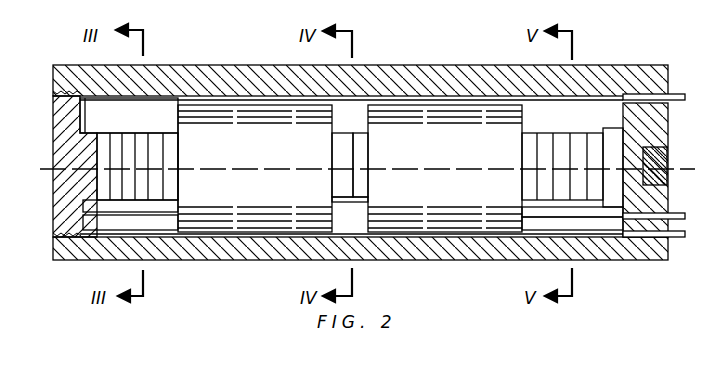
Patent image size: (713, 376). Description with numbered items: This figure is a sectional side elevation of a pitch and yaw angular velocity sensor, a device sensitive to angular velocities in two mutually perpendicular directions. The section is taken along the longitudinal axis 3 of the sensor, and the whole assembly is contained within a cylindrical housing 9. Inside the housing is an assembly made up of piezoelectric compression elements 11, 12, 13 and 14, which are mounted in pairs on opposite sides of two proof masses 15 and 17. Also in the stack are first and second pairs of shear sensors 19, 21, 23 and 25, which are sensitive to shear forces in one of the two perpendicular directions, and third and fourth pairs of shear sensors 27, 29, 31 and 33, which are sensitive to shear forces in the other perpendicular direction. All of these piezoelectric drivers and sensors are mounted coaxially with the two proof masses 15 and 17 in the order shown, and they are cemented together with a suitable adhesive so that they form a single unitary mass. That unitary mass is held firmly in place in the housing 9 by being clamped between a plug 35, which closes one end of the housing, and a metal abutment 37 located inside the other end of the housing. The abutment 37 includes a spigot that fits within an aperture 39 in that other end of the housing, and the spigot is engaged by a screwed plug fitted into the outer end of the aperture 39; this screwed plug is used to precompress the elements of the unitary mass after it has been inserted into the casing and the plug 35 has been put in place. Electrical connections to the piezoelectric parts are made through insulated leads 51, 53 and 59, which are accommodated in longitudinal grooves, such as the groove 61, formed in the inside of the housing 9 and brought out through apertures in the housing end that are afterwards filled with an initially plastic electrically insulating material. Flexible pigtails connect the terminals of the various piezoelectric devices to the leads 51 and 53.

The longitudinal axis 3 is at (262, 169).
The cylindrical housing 9 is at (388, 80).
The piezoelectric compression element 11 is at (173, 162).
The piezoelectric compression element 12 is at (340, 162).
The piezoelectric compression element 13 is at (360, 159).
The piezoelectric compression element 14 is at (531, 165).
The proof mass 15 is at (262, 197).
The proof mass 17 is at (452, 197).
The shear sensor 19 is at (140, 148).
The shear sensor 21 is at (176, 146).
The shear sensor 23 is at (545, 149).
The shear sensor 25 is at (565, 152).
The shear sensor 27 is at (99, 146).
The shear sensor 29 is at (119, 148).
The shear sensor 31 is at (581, 152).
The shear sensor 33 is at (599, 150).
The plug 35 is at (64, 143).
The metal abutment 37 is at (652, 205).
The aperture 39 is at (650, 150).
The insulated lead 51 is at (255, 98).
The insulated lead 53 is at (262, 237).
The insulated lead 59 is at (520, 216).
The longitudinal groove 61 is at (292, 98).